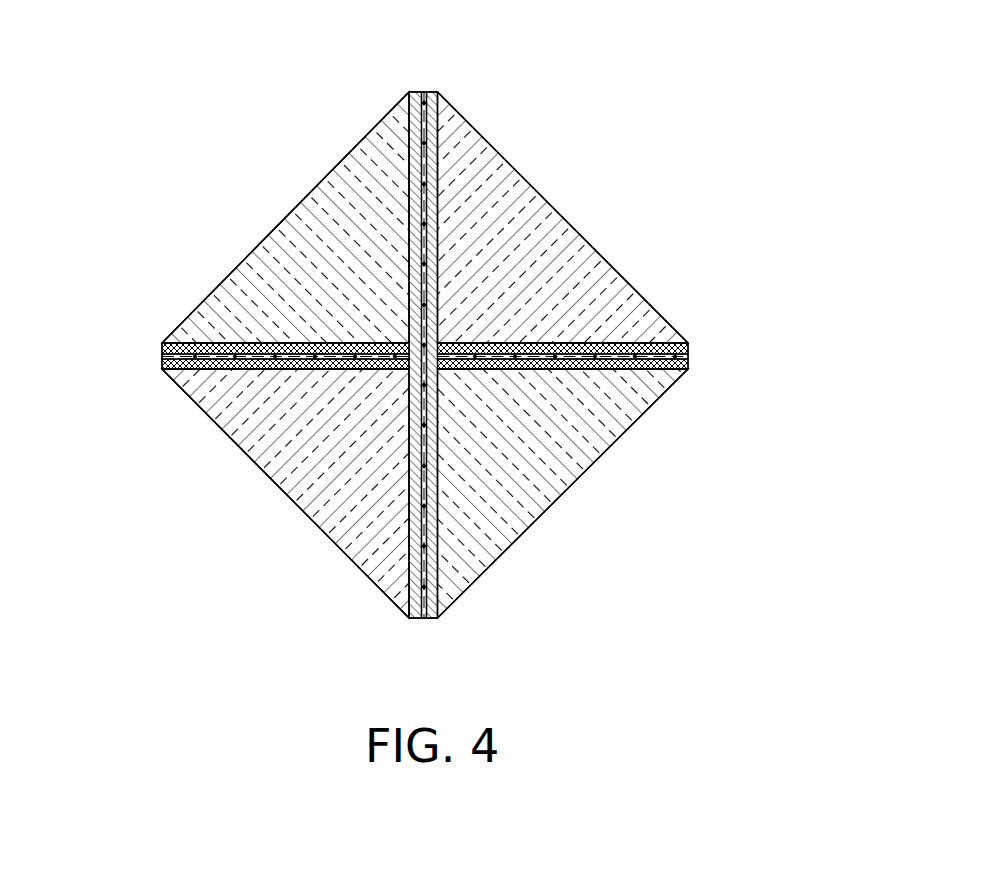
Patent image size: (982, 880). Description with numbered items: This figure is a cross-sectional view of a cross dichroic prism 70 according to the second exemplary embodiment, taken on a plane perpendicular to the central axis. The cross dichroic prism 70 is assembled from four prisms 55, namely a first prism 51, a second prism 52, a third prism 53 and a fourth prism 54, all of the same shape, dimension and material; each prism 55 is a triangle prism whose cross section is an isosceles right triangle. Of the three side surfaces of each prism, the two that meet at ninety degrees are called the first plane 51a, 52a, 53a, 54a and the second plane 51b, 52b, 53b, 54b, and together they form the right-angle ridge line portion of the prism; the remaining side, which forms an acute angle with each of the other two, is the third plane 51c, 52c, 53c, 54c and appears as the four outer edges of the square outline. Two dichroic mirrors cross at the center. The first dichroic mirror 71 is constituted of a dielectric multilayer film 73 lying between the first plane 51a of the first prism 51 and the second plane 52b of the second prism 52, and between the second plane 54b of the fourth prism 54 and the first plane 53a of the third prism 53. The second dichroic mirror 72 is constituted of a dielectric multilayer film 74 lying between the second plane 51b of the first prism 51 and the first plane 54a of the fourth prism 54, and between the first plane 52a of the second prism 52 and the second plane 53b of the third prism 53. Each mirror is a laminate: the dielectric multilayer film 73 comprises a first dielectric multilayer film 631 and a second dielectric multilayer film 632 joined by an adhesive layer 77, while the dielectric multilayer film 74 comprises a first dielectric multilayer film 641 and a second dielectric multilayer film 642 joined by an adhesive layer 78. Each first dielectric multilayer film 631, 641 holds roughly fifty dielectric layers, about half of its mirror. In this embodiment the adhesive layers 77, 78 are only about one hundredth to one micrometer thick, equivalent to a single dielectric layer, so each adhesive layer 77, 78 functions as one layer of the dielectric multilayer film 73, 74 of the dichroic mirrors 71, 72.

The cross dichroic prism 70 is at (418, 80).
The first dichroic mirror 71 is at (392, 347).
The second dichroic mirror 72 is at (436, 376).
The dielectric multilayer film 73 is at (315, 347).
The dielectric multilayer film 74 is at (436, 444).
The adhesive layer 77 is at (424, 172).
The adhesive layer 78 is at (262, 356).
The first dielectric multilayer film 631 is at (413, 150).
The second dielectric multilayer film 632 is at (432, 193).
The first dielectric multilayer film 641 is at (235, 368).
The second dielectric multilayer film 642 is at (290, 348).
The prism 55 is at (417, 355).
The first prism 51 is at (543, 512).
The second prism 52 is at (340, 500).
The third prism 53 is at (265, 258).
The fourth prism 54 is at (541, 235).
The first plane 51a is at (439, 586).
The second plane 51b is at (689, 372).
The third plane 51c is at (520, 543).
The first plane 52a is at (208, 372).
The second plane 52b is at (410, 592).
The third plane 52c is at (353, 560).
The first plane 53a is at (411, 126).
The second plane 53b is at (203, 345).
The third plane 53c is at (218, 340).
The first plane 54a is at (668, 348).
The second plane 54b is at (434, 133).
The third plane 54c is at (609, 343).